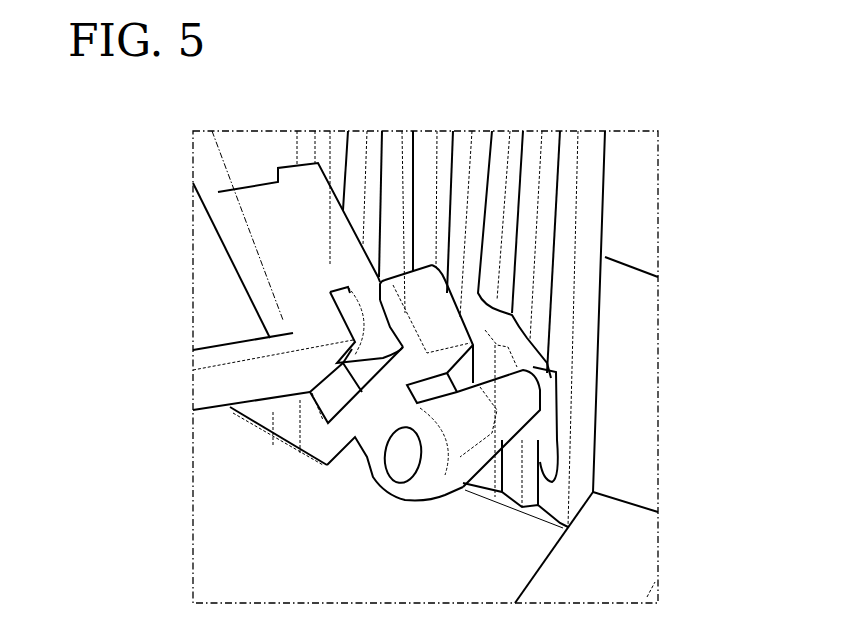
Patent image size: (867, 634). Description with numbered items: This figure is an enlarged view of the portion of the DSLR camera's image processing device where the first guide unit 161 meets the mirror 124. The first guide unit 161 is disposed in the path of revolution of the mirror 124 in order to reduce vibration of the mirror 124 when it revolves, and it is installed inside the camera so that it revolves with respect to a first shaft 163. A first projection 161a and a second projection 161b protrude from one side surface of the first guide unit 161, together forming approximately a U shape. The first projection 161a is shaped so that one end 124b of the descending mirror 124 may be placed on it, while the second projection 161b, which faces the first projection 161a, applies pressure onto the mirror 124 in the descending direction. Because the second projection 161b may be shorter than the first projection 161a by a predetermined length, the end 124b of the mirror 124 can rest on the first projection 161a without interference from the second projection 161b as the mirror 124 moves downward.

The mirror 124 is at (212, 288).
The end of the mirror 124b is at (373, 317).
The first guide unit 161 is at (442, 313).
The first projection 161a is at (307, 412).
The second projection 161b is at (378, 280).
The first shaft 163 is at (400, 457).